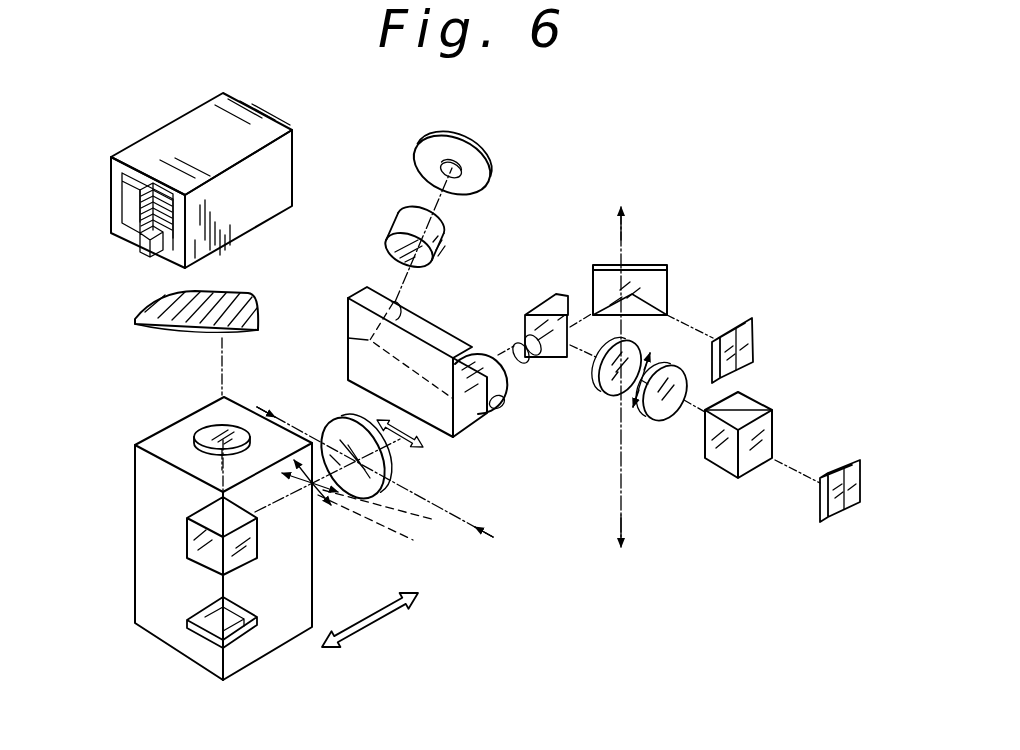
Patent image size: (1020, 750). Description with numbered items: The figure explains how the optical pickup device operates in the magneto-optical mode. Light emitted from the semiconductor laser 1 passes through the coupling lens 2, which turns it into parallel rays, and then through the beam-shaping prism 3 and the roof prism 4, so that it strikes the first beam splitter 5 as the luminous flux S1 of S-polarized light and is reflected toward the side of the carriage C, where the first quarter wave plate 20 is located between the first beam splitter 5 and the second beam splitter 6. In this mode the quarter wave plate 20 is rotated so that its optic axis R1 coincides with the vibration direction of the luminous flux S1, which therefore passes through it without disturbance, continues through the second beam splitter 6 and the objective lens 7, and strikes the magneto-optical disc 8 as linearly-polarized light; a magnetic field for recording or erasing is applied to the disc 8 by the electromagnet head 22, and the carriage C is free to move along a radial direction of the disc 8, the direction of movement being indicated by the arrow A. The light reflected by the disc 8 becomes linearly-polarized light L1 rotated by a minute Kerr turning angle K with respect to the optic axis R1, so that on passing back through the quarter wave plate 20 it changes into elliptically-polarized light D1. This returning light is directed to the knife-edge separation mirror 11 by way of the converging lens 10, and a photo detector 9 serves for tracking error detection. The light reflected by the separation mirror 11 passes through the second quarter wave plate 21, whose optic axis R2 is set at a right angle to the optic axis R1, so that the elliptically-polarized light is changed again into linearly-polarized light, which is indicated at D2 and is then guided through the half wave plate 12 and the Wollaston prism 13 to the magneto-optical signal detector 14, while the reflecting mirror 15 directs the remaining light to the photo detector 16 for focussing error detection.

The semiconductor laser 1 is at (486, 178).
The coupling lens 2 is at (448, 235).
The beam-shaping prism 3 is at (363, 296).
The roof prism 4 is at (350, 372).
The first beam splitter 5 is at (465, 360).
The second beam splitter 6 is at (187, 544).
The objective lens 7 is at (198, 433).
The magneto-optical disc 8 is at (160, 334).
The photo detector for tracking error detection 9 is at (190, 638).
The converging lens 10 is at (495, 404).
The separation mirror 11 is at (546, 302).
The half wave plate 12 is at (663, 423).
The Wollaston prism 13 is at (767, 432).
The magneto-optical signal detector 14 is at (862, 465).
The reflecting mirror 15 is at (658, 279).
The photo detector for focussing error detection 16 is at (755, 342).
The first quarter wave plate 20 is at (338, 430).
The second quarter wave plate 21 is at (612, 396).
The electromagnet head 22 is at (118, 203).
The elliptically-polarized light D1 is at (447, 438).
The detector lenses D2 is at (540, 352).
The luminous flux of S-polarized light S1 is at (416, 454).
The optic axis of the first quarter wave plate R1 is at (478, 523).
The optic axis of the second quarter wave plate R2 is at (624, 240).
The linearly-polarized light L1 is at (318, 495).
The Kerr turning angle K is at (408, 520).
The direction of movement A is at (387, 620).
The carriage C is at (283, 646).